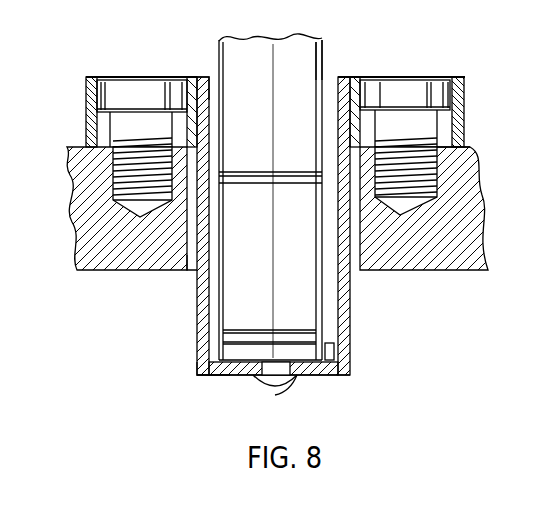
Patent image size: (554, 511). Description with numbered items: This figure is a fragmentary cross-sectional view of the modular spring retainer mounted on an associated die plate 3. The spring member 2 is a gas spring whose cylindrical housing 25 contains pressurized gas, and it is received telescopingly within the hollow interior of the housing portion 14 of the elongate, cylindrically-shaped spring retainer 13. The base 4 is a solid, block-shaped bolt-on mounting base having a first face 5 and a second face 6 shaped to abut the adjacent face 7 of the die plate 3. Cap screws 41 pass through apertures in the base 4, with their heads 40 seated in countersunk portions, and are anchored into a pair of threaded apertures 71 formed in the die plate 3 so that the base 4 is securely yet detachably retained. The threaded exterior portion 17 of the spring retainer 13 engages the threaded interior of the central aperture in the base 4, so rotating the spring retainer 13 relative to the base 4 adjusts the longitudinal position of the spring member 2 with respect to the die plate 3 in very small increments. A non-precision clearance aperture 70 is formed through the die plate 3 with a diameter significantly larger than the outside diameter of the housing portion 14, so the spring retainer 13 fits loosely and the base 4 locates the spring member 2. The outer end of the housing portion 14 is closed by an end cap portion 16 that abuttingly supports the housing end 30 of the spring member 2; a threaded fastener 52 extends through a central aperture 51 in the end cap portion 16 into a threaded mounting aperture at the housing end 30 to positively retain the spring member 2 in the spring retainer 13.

The spring member 2 is at (217, 37).
The die plate 3 is at (67, 147).
The base 4 is at (460, 76).
The first face 5 is at (197, 78).
The second face 6 is at (480, 157).
The adjacent face 7 is at (459, 157).
The spring retainer 13 is at (200, 372).
The housing portion 14 is at (347, 298).
The end cap portion 16 is at (227, 378).
The threaded exterior portion 17 is at (357, 107).
The cylindrical housing 25 is at (320, 53).
The housing end 30 is at (332, 347).
The heads 40 is at (133, 77).
The cap screws 41 is at (127, 123).
The central aperture 51 is at (287, 385).
The threaded fastener 52 is at (273, 388).
The clearance aperture 70 is at (195, 270).
The threaded apertures 71 is at (126, 182).